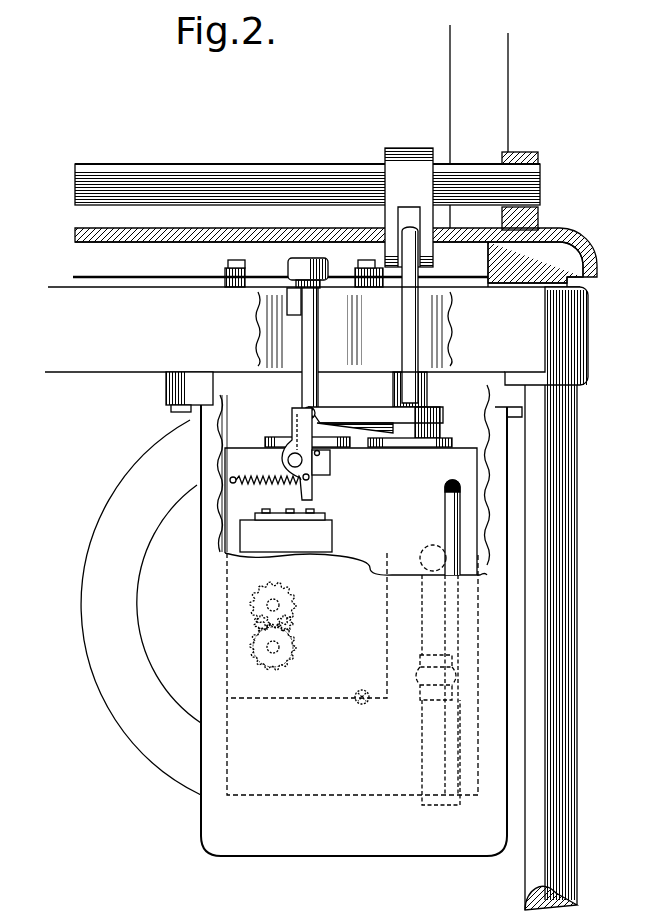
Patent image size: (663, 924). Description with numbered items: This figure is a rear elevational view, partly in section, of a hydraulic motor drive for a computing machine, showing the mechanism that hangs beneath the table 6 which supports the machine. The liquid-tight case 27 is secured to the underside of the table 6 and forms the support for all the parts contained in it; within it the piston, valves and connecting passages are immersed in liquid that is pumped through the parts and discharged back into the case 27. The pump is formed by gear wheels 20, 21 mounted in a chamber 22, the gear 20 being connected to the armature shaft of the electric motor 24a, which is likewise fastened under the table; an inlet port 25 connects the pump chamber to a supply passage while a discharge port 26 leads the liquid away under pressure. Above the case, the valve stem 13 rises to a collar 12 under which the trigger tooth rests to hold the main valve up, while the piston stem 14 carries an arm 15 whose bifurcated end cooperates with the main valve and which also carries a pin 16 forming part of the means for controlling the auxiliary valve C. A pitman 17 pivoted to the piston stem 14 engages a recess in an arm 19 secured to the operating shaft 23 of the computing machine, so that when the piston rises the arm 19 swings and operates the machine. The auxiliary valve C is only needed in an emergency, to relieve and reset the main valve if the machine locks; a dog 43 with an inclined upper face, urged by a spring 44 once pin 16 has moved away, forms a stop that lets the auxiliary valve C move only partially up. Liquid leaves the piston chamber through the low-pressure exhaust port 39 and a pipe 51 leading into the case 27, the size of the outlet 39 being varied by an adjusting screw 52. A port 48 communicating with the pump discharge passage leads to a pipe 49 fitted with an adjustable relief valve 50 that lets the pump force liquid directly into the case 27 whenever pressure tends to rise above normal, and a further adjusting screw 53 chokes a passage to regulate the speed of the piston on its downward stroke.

The table 6 is at (101, 362).
The collar 12 is at (292, 262).
The valve stem 13 is at (318, 323).
The piston stem 14 is at (440, 399).
The arm 15 is at (376, 417).
The pin 16 is at (317, 409).
The pitman 17 is at (408, 327).
The arm 19 is at (409, 207).
The gear wheel 20 is at (262, 598).
The gear wheel 21 is at (262, 645).
The chamber 22 is at (258, 658).
The operating shaft 23 is at (279, 172).
The electric motor 24a is at (98, 683).
The inlet port 25 is at (294, 624).
The discharge port 26 is at (258, 624).
The case 27 is at (361, 620).
The exhaust port 39 is at (446, 484).
The dog 43 is at (292, 430).
The spring 44 is at (259, 479).
The port 48 is at (430, 548).
The pipe 49 is at (422, 606).
The relief valve 50 is at (420, 670).
The pipe 51 is at (445, 507).
The adjusting screw 52 is at (478, 472).
The adjusting screw 53 is at (361, 690).
The auxiliary valve C is at (289, 508).